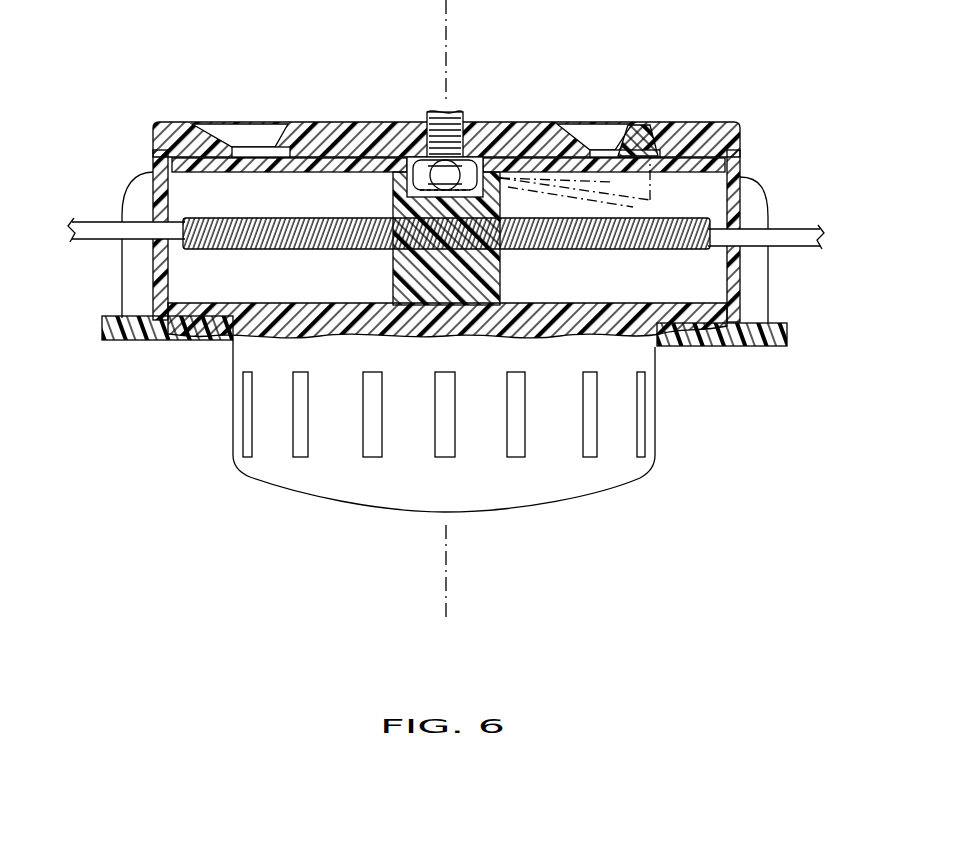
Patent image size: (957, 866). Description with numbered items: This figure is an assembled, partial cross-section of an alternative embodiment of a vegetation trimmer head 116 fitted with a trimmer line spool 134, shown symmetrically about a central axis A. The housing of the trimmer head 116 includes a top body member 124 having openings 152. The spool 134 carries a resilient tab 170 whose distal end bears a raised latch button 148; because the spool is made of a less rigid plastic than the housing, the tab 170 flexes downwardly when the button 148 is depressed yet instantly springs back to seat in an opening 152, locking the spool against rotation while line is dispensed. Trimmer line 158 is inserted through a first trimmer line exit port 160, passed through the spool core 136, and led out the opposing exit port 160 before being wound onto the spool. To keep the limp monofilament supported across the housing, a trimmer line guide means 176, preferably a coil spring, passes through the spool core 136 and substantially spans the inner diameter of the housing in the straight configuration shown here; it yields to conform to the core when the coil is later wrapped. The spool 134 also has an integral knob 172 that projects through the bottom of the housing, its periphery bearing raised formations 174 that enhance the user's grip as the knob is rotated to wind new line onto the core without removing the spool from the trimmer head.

The axis A is at (447, 22).
The vegetation trimmer head 116 is at (154, 120).
The top body member 124 is at (153, 140).
The opening 152 is at (266, 147).
The raised latch button 148 is at (647, 130).
The spool core 136 is at (410, 203).
The resilient tab 170 is at (593, 200).
The trimmer line guide means 176 is at (262, 250).
The trimmer line 158 is at (803, 228).
The trimmer line exit port 160 is at (155, 240).
The trimmer line spool 134 is at (530, 304).
The knob 172 is at (410, 512).
The raised formations 174 is at (520, 438).